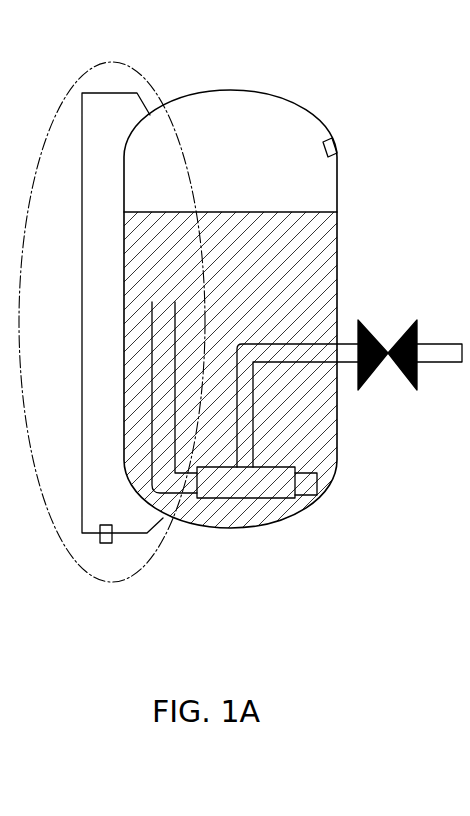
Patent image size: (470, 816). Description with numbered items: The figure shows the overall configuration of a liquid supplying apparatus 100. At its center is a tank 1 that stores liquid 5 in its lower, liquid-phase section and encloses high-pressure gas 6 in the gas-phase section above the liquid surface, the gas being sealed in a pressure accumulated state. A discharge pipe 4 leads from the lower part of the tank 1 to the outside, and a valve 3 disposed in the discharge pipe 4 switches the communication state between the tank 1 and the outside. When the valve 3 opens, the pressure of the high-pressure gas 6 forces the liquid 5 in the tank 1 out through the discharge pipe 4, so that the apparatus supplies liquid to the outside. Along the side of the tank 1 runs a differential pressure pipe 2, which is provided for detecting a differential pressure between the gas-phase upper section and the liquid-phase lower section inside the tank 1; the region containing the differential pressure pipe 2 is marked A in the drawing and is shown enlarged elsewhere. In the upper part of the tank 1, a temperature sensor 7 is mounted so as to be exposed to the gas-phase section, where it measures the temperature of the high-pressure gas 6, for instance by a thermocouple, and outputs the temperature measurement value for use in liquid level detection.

The liquid supplying apparatus 100 is at (388, 104).
The tank 1 is at (292, 104).
The differential pressure pipe 2 is at (82, 392).
The valve 3 is at (378, 332).
The discharge pipe 4 is at (445, 343).
The liquid 5 is at (313, 245).
The high-pressure gas 6 is at (287, 152).
The temperature sensor 7 is at (336, 146).
The region A is at (137, 72).